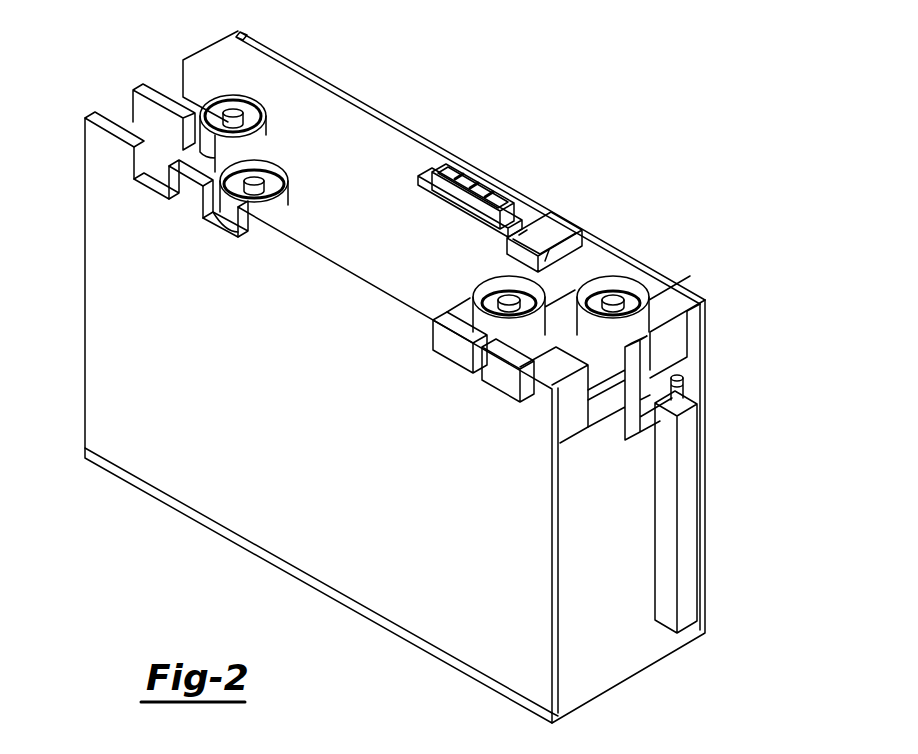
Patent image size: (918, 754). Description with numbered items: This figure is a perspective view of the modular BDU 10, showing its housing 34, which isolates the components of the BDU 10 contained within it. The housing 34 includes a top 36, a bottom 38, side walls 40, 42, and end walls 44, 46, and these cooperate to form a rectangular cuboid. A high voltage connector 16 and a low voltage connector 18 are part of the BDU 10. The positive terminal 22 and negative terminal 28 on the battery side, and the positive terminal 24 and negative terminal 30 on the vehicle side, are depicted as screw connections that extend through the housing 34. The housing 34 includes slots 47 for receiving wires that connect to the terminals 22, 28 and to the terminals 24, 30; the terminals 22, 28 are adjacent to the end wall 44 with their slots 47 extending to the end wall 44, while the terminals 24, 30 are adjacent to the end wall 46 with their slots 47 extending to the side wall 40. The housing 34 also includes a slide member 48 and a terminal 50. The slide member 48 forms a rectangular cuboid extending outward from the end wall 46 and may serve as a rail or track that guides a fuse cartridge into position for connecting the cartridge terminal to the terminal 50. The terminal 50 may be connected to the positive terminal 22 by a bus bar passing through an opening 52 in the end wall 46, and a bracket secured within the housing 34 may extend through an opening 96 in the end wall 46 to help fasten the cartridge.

The modular BDU 10 is at (440, 84).
The high voltage connector 16 is at (478, 195).
The low voltage connector 18 is at (548, 235).
The positive terminal 22 is at (612, 298).
The positive terminal 24 is at (232, 115).
The negative terminal 28 is at (508, 300).
The negative terminal 30 is at (254, 183).
The housing 34 is at (188, 372).
The top 36 is at (370, 142).
The bottom 38 is at (398, 628).
The side wall 40 is at (332, 493).
The side wall 42 is at (708, 428).
The end wall 44 is at (85, 210).
The end wall 46 is at (602, 654).
The slots 47 is at (180, 95).
The slide member 48 is at (693, 495).
The terminal 50 is at (684, 390).
The opening 52 is at (685, 357).
The opening 96 is at (597, 413).